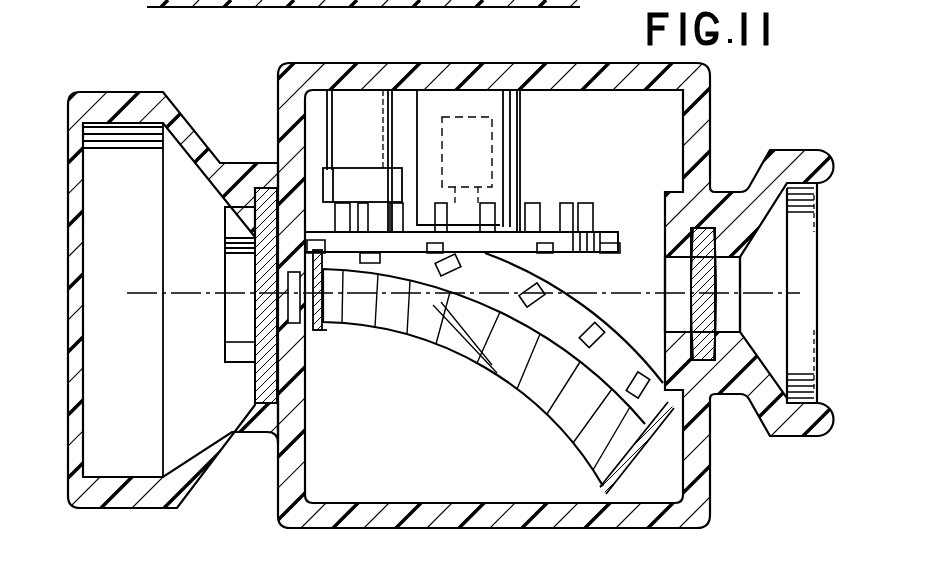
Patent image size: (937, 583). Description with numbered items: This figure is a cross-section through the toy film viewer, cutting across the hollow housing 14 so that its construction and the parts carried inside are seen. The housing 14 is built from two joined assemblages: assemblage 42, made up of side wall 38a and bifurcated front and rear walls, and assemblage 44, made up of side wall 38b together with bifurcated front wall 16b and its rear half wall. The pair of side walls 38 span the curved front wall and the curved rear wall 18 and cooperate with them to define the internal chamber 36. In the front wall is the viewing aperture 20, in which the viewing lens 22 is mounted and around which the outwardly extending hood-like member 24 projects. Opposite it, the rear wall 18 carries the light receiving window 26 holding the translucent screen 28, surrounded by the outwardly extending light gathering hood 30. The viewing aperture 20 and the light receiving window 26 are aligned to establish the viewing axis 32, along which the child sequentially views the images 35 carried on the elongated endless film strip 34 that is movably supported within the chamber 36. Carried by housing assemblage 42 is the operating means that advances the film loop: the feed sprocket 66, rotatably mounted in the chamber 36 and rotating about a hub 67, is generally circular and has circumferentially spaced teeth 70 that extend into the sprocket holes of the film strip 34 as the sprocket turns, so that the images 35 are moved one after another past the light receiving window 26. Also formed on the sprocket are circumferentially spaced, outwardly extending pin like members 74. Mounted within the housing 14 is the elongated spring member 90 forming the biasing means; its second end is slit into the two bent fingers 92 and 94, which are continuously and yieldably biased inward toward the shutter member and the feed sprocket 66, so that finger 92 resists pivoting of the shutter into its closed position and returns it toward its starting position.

The housing 14 is at (272, 506).
The bifurcated front wall 16b is at (712, 470).
The rear wall 18 is at (277, 472).
The viewing aperture 20 is at (730, 316).
The viewing lens 22 is at (712, 273).
The hood-like member 24 is at (788, 150).
The light receiving window 26 is at (238, 360).
The translucent screen 28 is at (263, 307).
The light gathering hood 30 is at (67, 150).
The viewing axis 32 is at (607, 297).
The film strip 34 is at (333, 298).
The images 35 is at (568, 402).
The internal chamber 36 is at (668, 112).
The side walls 38 is at (423, 62).
The side wall 38a is at (527, 62).
The side wall 38b is at (420, 7).
The housing assemblage 42 is at (272, 108).
The housing assemblage 44 is at (198, 10).
The feed sprocket 66 is at (612, 210).
The hub 67 is at (520, 122).
The teeth 70 is at (305, 247).
The pin like members 74 is at (493, 213).
The spring member 90 is at (318, 184).
The bent finger 92 is at (330, 172).
The bent finger 94 is at (352, 203).